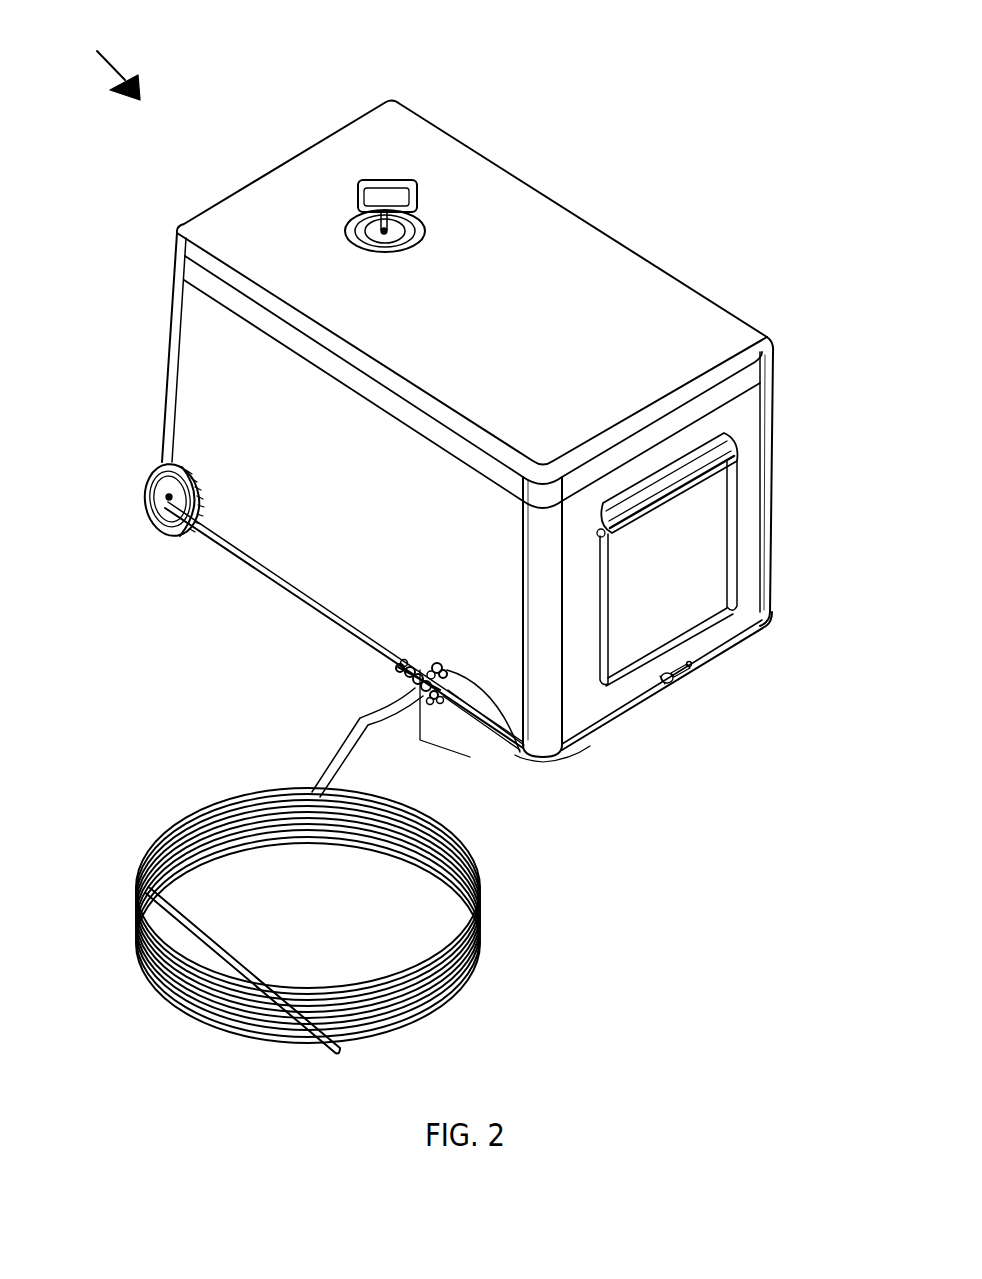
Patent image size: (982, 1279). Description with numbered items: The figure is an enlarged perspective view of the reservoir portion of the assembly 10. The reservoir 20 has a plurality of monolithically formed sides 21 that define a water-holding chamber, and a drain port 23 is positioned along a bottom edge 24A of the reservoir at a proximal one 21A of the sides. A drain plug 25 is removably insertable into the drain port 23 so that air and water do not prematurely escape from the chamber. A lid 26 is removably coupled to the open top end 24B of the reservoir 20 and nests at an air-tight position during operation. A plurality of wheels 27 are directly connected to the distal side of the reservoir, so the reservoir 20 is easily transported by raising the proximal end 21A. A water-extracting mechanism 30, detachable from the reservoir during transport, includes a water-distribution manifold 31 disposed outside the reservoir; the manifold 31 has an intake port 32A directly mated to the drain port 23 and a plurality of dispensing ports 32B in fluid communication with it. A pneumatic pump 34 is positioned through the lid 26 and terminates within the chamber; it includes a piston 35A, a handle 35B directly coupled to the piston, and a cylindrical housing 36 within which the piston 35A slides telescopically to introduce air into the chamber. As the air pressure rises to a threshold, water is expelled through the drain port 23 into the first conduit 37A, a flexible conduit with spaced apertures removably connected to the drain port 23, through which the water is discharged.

The assembly 10 is at (104, 64).
The reservoir 20 is at (148, 385).
The sides 21 is at (307, 560).
The proximal one of the sides 21A is at (713, 502).
The drain port 23 is at (522, 742).
The bottom edge 24A is at (588, 735).
The open top end 24B is at (742, 415).
The drain plug 25 is at (670, 680).
The lid 26 is at (188, 270).
The wheels 27 is at (165, 530).
The water-extracting mechanism 30 is at (203, 788).
The water-distribution manifold 31 is at (430, 667).
The intake port 32A is at (438, 667).
The dispensing ports 32B is at (405, 690).
The pneumatic pump 34 is at (432, 182).
The piston 35A is at (353, 211).
The handle 35B is at (407, 182).
The cylindrical housing 36 is at (423, 237).
The first conduit 37A is at (468, 962).